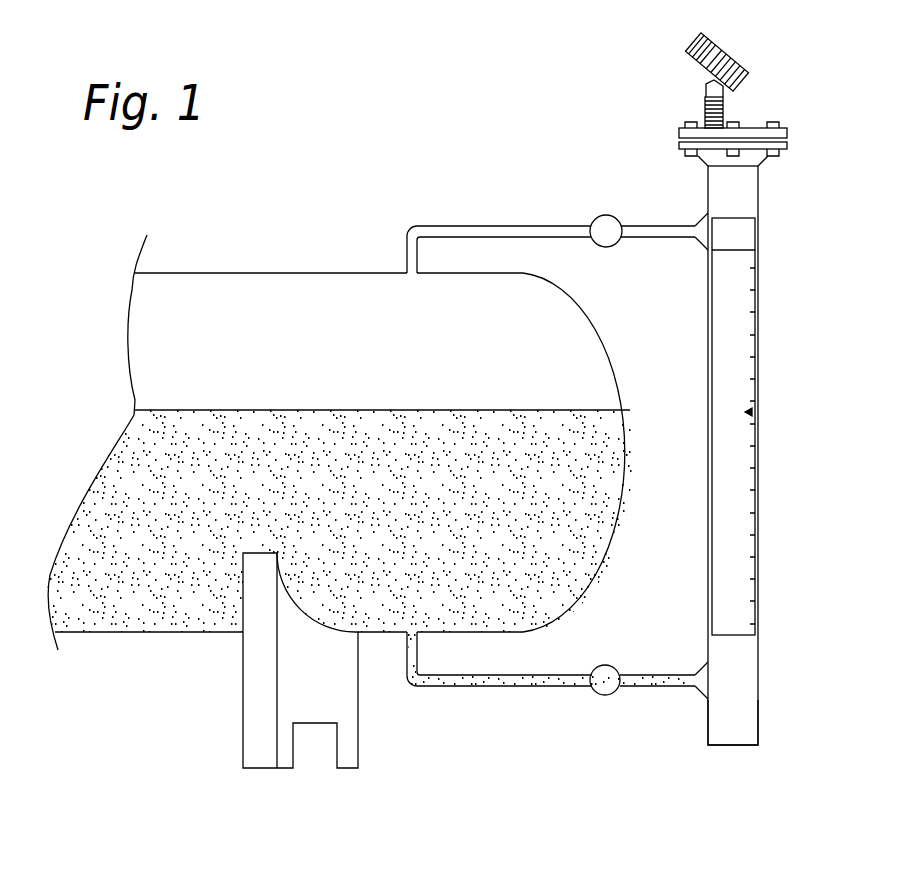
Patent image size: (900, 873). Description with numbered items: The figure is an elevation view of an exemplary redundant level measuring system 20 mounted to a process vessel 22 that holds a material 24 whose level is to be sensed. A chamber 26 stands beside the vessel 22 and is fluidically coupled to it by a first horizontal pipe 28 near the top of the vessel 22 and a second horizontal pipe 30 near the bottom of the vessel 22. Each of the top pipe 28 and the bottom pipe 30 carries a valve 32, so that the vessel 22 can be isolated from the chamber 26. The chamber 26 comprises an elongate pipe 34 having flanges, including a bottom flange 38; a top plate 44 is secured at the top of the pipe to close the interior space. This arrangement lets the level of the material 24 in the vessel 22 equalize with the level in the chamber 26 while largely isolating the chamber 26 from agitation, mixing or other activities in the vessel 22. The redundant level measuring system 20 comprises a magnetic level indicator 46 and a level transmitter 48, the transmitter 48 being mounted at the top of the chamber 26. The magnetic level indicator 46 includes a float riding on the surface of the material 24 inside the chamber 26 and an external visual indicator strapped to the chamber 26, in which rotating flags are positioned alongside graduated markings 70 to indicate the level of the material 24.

The redundant level measuring system 20 is at (628, 148).
The vessel 22 is at (590, 347).
The material 24 is at (280, 408).
The chamber 26 is at (748, 199).
The first horizontal pipe 28 is at (488, 222).
The second horizontal pipe 30 is at (510, 687).
The valve 32 is at (606, 213).
The elongate pipe 34 is at (758, 708).
The bottom flange 38 is at (788, 146).
The top plate 44 is at (788, 130).
The magnetic level indicator 46 is at (810, 331).
The level transmitter 48 is at (744, 47).
The graduated markings 70 is at (754, 411).